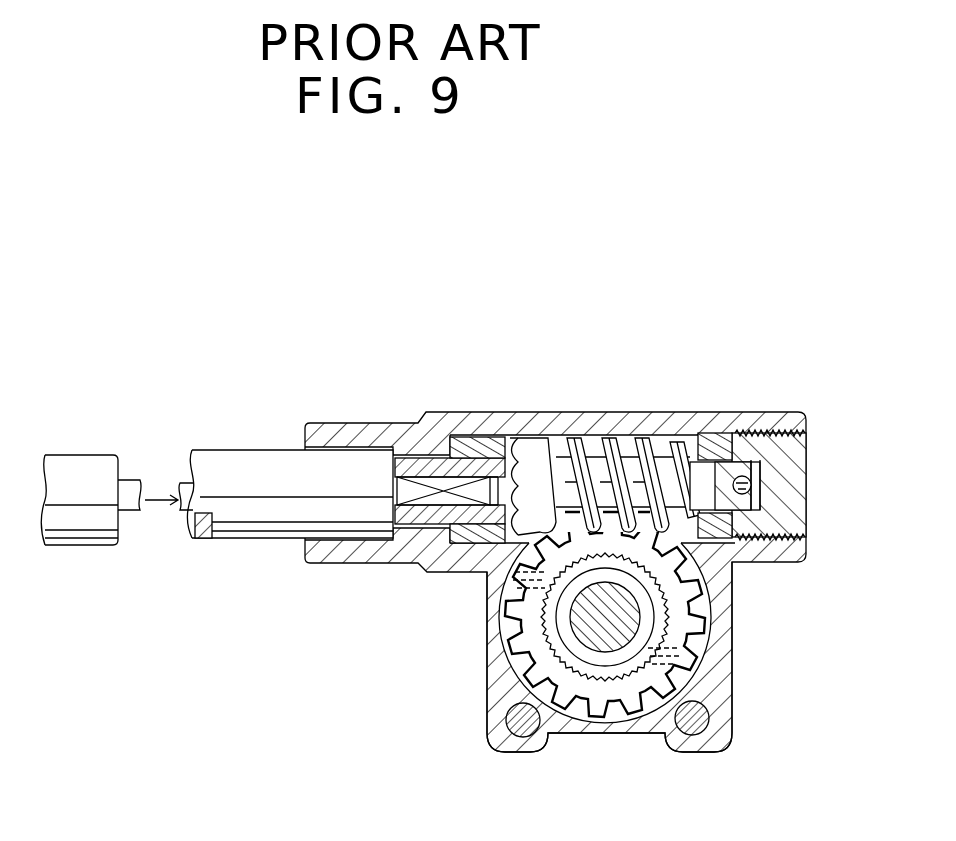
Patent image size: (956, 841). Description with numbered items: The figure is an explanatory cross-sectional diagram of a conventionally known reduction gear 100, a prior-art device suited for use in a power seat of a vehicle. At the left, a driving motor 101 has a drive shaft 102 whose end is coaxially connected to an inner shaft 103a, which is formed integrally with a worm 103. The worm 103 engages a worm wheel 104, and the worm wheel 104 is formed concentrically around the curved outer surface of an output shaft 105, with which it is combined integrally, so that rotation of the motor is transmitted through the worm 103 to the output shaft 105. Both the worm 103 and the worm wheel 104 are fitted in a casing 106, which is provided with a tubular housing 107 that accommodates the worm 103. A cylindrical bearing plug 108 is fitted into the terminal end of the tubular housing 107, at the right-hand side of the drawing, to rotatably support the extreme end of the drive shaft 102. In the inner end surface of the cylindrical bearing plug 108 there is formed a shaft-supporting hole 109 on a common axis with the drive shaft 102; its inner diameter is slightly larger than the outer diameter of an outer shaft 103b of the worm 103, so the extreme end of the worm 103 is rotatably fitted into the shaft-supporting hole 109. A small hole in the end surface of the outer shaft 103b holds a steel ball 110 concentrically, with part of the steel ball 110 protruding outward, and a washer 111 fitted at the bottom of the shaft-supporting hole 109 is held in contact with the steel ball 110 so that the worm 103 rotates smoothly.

The reduction gear 100 is at (593, 393).
The driving motor 101 is at (92, 538).
The drive shaft 102 is at (435, 500).
The worm 103 is at (560, 465).
The inner shaft 103a is at (430, 466).
The outer shaft 103b is at (738, 462).
The worm wheel 104 is at (538, 677).
The output shaft 105 is at (607, 623).
The casing 106 is at (496, 645).
The tubular housing 107 is at (715, 428).
The cylindrical bearing plug 108 is at (790, 509).
The shaft-supporting hole 109 is at (733, 513).
The steel ball 110 is at (792, 432).
The washer 111 is at (750, 487).